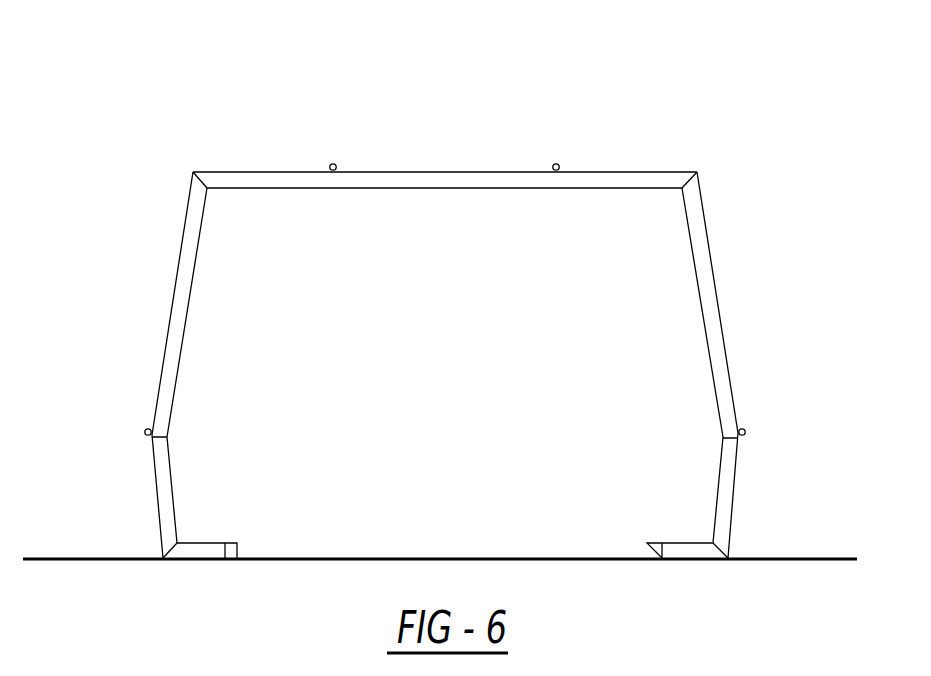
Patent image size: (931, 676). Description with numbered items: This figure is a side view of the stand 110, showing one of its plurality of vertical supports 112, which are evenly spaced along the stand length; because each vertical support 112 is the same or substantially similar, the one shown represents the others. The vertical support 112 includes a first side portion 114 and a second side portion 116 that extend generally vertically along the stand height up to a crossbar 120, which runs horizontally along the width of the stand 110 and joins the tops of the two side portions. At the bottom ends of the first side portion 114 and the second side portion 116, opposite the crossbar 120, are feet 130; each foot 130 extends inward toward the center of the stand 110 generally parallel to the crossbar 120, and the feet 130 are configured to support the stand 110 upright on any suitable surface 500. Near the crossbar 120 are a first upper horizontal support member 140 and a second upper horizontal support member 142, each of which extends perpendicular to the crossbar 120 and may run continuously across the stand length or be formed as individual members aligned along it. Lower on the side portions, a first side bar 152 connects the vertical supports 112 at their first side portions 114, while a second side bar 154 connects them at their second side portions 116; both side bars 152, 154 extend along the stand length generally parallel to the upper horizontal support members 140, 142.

The stand 110 is at (166, 90).
The vertical support 112 is at (184, 228).
The first side portion 114 is at (167, 333).
The second side portion 116 is at (717, 298).
The crossbar 120 is at (437, 171).
The feet 130 is at (235, 560).
The first upper horizontal support member 140 is at (333, 164).
The second upper horizontal support member 142 is at (557, 164).
The first side bar 152 is at (145, 430).
The second side bar 154 is at (746, 432).
The surface 500 is at (95, 557).